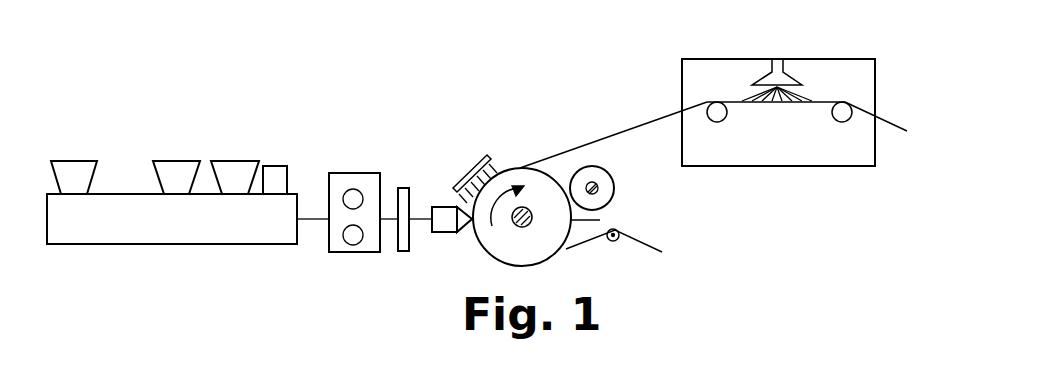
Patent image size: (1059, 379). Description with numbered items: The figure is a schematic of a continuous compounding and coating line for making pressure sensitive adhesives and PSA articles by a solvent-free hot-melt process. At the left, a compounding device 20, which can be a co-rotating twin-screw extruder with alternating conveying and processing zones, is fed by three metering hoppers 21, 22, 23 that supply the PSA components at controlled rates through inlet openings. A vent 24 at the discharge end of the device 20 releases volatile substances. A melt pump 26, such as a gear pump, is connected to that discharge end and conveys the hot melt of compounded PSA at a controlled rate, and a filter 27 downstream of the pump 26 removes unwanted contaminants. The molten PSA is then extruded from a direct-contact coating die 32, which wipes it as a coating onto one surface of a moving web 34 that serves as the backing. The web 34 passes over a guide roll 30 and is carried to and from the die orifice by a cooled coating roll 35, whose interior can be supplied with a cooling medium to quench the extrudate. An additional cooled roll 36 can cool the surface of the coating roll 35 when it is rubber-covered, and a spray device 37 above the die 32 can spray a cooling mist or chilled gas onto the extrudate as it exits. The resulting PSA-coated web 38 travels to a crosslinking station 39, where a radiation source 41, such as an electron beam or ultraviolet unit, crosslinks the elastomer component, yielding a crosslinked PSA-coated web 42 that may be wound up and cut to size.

The compounding device 20 is at (222, 240).
The metering hopper 21 is at (82, 170).
The metering hopper 22 is at (178, 167).
The metering hopper 23 is at (237, 178).
The vent 24 is at (278, 180).
The melt pump 26 is at (363, 252).
The filter 27 is at (405, 235).
The guide roll 30 is at (612, 242).
The direct-contact coating die 32 is at (457, 227).
The web 34 is at (643, 247).
The cooled coating roll 35 is at (600, 220).
The additional cooled roll 36 is at (614, 185).
The spray device 37 is at (478, 154).
The PSA-coated web 38 is at (640, 127).
The crosslinking station 39 is at (777, 167).
The radiation source 41 is at (788, 80).
The crosslinked PSA-coated web 42 is at (897, 122).